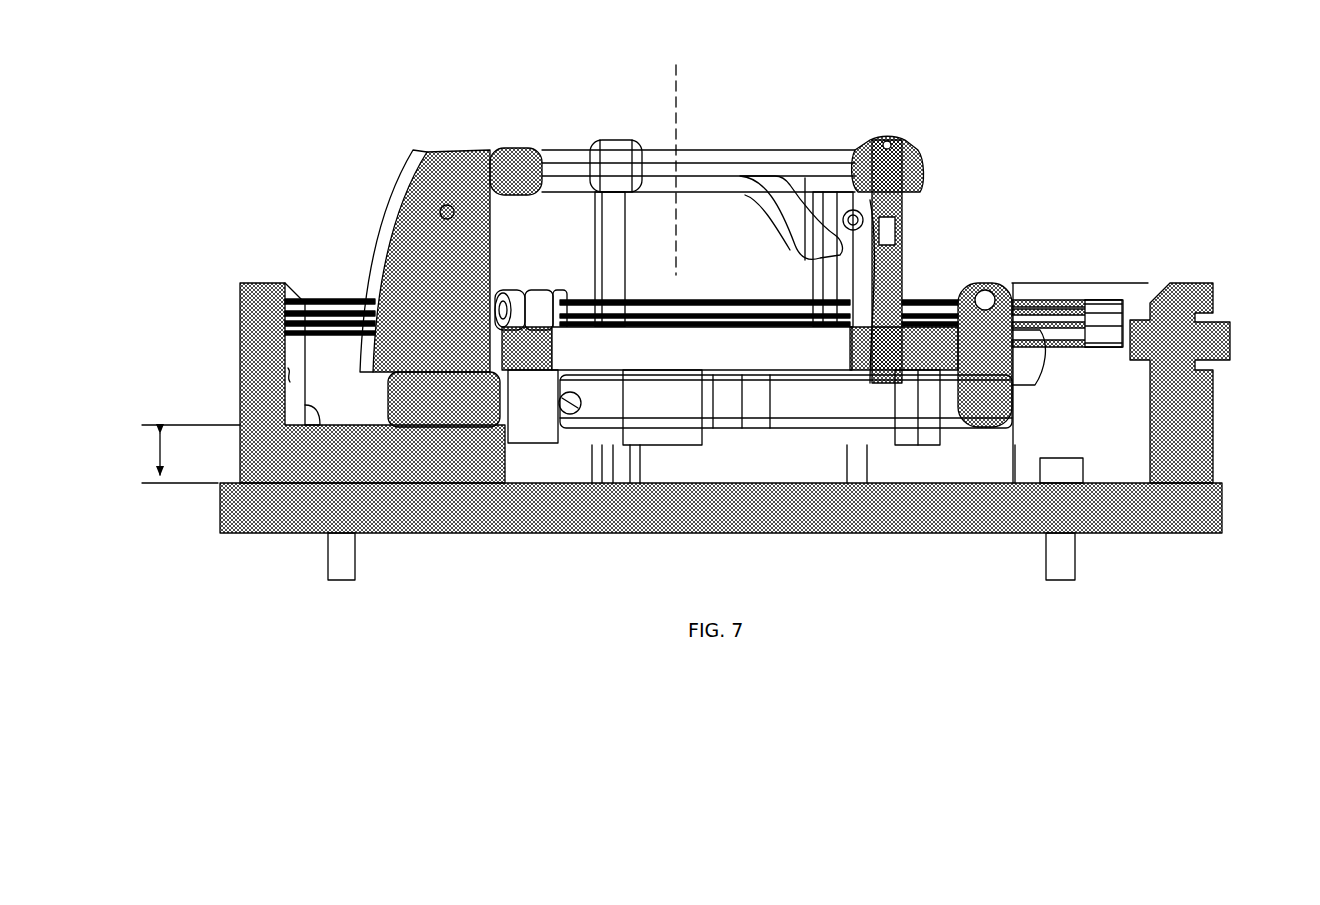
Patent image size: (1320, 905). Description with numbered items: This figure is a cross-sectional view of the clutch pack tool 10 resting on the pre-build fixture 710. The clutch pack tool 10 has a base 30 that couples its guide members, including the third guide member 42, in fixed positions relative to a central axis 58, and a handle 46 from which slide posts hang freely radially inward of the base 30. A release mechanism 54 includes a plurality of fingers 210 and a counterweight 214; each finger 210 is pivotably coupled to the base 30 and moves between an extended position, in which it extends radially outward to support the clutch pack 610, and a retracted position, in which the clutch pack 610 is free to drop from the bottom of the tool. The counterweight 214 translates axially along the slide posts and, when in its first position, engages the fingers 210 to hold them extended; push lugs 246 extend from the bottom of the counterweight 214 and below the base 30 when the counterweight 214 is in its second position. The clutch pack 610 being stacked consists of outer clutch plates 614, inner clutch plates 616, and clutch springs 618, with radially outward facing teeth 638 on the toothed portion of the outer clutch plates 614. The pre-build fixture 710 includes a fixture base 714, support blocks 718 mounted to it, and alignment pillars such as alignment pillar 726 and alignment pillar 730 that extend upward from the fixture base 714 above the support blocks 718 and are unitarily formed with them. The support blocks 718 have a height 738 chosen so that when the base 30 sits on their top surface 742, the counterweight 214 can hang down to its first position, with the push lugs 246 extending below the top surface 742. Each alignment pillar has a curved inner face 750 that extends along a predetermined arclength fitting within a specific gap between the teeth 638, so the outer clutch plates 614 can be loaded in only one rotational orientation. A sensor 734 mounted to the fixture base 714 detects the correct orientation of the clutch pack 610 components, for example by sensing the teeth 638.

The clutch pack tool 10 is at (365, 105).
The base 30 is at (790, 415).
The third guide member 42 is at (390, 192).
The handle 46 is at (545, 150).
The release mechanism 54 is at (920, 237).
The central axis 58 is at (678, 90).
The finger 210 is at (1038, 365).
The counterweight 214 is at (605, 353).
The push lug 246 is at (542, 443).
The clutch pack 610 is at (1075, 283).
The outer clutch plate 614 is at (1105, 292).
The inner clutch plate 616 is at (1060, 300).
The clutch spring 618 is at (1100, 305).
The tooth 638 is at (1127, 307).
The pre-build fixture 710 is at (258, 555).
The fixture base 714 is at (413, 520).
The support block 718 is at (316, 475).
The alignment pillar 726 is at (978, 465).
The alignment pillar 730 is at (252, 330).
The sensor 734 is at (1230, 320).
The height 738 is at (160, 450).
The top surface 742 is at (320, 420).
The curved inner face 750 is at (288, 372).